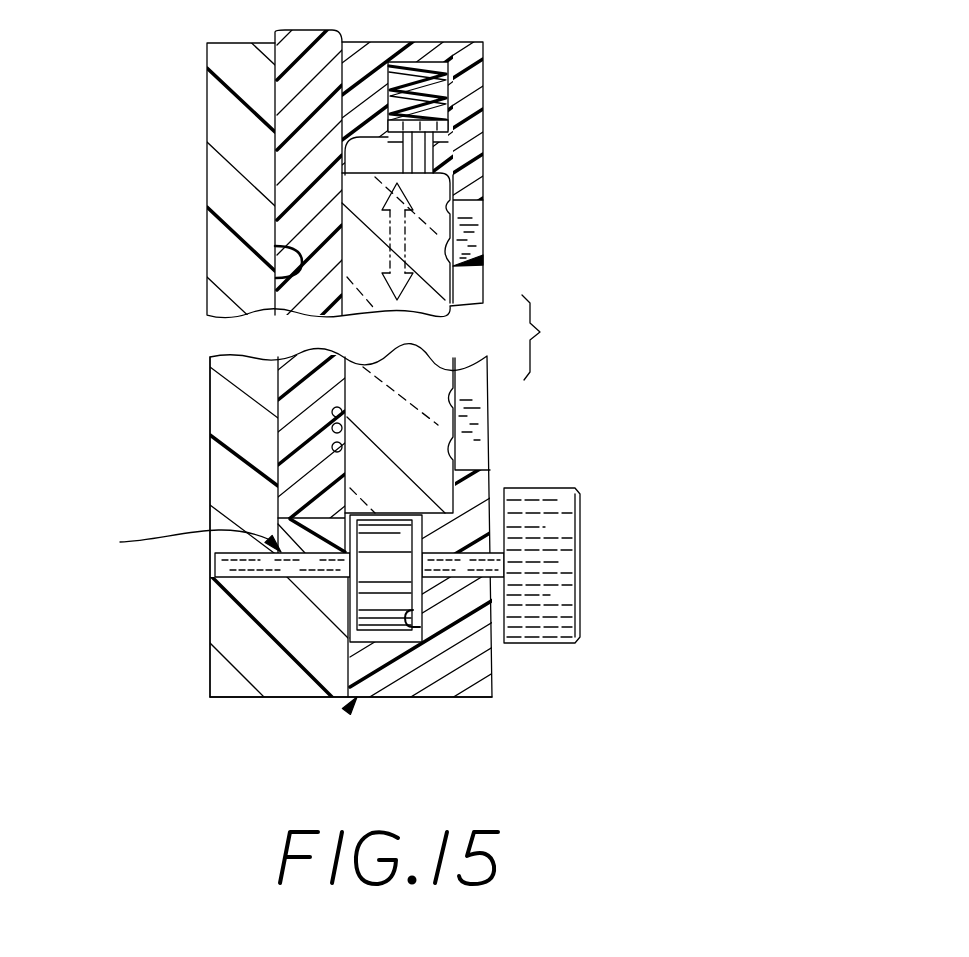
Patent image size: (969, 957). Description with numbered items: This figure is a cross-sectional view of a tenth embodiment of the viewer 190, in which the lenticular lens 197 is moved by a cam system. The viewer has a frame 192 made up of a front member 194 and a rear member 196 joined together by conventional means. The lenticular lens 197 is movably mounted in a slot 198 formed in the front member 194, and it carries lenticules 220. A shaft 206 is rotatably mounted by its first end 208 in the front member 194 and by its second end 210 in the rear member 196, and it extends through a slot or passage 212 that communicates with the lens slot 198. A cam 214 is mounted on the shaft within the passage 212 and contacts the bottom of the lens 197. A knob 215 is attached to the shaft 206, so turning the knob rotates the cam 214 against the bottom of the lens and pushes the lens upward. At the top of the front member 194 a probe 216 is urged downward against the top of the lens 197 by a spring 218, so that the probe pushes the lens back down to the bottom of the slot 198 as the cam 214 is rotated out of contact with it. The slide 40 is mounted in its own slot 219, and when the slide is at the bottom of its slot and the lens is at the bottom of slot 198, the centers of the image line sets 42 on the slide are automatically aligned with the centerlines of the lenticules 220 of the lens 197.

The slide 40 is at (305, 13).
The image line sets 42 is at (331, 428).
The viewer 190 is at (663, 473).
The frame 192 is at (346, 711).
The front member 194 is at (465, 699).
The rear member 196 is at (250, 699).
The lenticular lens 197 is at (486, 262).
The slot 198 is at (347, 152).
The shaft 206 is at (193, 549).
The first end 208 is at (472, 545).
The second end 210 is at (354, 596).
The slot or passage 212 is at (410, 622).
The cam 214 is at (408, 612).
The knob 215 is at (583, 587).
The probe 216 is at (435, 148).
The spring 218 is at (450, 84).
The slot 219 is at (292, 278).
The lenticules 220 is at (457, 395).